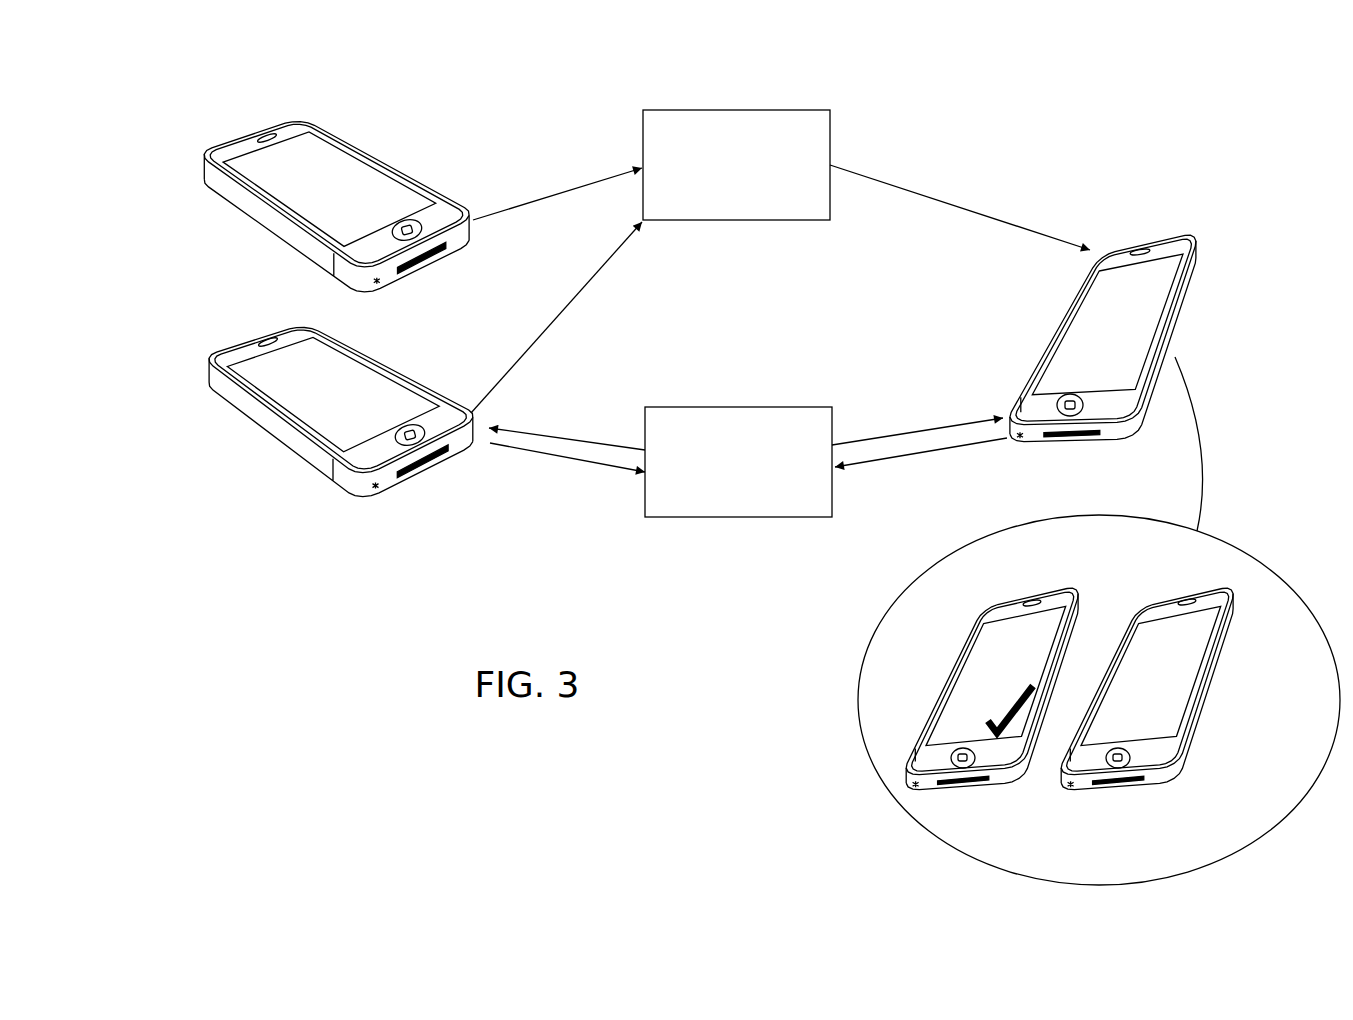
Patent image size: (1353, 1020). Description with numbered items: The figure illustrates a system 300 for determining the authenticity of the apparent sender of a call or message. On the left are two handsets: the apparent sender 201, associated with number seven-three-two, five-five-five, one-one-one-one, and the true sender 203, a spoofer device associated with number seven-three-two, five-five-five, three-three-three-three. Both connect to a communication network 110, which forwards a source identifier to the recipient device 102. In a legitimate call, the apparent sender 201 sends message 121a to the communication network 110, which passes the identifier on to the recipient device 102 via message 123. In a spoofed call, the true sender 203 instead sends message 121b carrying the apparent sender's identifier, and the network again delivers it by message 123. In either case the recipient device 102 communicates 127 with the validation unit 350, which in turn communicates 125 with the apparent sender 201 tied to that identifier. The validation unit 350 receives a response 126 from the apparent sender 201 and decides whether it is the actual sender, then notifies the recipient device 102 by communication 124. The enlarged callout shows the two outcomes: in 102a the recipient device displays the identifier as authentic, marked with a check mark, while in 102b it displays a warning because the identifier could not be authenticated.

The system 300 is at (1007, 110).
The communication network 110 is at (735, 110).
The validation unit 350 is at (737, 407).
The true sender 203 is at (297, 117).
The apparent sender 201 is at (297, 322).
The recipient device 102 is at (1192, 234).
The recipient device display of authenticity 102a is at (1003, 601).
The recipient device display of warning 102b is at (1153, 601).
The message 121a is at (540, 324).
The message 121b is at (545, 196).
The message 123 is at (947, 204).
The communication 124 is at (903, 433).
The communication 125 is at (570, 439).
The response 126 is at (549, 455).
The communication 127 is at (942, 450).